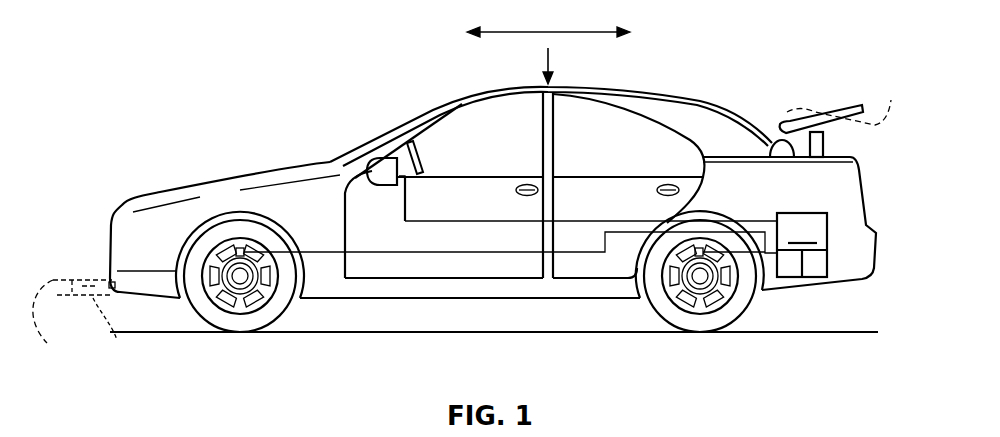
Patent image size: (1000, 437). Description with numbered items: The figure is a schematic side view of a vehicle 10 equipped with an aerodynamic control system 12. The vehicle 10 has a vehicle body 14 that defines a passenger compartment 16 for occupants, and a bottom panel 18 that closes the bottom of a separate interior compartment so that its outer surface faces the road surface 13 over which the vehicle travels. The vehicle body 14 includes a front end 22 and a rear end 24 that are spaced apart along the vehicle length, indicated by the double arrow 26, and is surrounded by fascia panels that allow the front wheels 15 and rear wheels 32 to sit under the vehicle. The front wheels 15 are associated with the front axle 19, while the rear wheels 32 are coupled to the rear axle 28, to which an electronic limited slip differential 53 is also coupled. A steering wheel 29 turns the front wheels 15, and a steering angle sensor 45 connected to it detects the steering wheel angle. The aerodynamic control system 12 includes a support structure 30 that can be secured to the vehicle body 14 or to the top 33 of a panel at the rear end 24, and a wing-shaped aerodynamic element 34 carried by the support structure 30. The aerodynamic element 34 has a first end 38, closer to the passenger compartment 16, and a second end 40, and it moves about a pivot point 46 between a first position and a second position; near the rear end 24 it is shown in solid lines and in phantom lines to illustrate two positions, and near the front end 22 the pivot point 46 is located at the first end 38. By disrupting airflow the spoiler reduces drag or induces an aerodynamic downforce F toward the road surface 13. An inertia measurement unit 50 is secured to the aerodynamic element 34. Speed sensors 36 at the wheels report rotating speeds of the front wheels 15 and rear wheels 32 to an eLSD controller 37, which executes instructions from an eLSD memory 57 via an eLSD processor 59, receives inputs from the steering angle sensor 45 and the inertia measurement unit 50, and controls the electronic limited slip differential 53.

The vehicle 10 is at (180, 104).
The aerodynamic control system 12 is at (842, 79).
The road surface 13 is at (543, 333).
The vehicle body 14 is at (290, 196).
The front wheels 15 is at (267, 313).
The passenger compartment 16 is at (436, 134).
The bottom panel 18 is at (362, 300).
The front axle 19 is at (220, 327).
The front end 22 is at (110, 238).
The rear end 24 is at (866, 195).
The double arrow 26 is at (543, 31).
The rear axle 28 is at (687, 323).
The steering wheel 29 is at (421, 168).
The support structure 30 is at (827, 142).
The rear wheels 32 is at (733, 308).
The top of panel 33 is at (770, 148).
The aerodynamic element 34 is at (840, 112).
The sensors 36 is at (238, 247).
The eLSD controller 37 is at (802, 245).
The first end 38 is at (777, 130).
The second end 40 is at (858, 105).
The steering angle sensor 45 is at (403, 180).
The pivot point 46 is at (114, 282).
The inertia measurement unit 50 is at (74, 277).
The electronic limited slip differential 53 is at (745, 290).
The eLSD memory 57 is at (788, 268).
The eLSD processor 59 is at (822, 268).
The aerodynamic downforce F is at (552, 72).